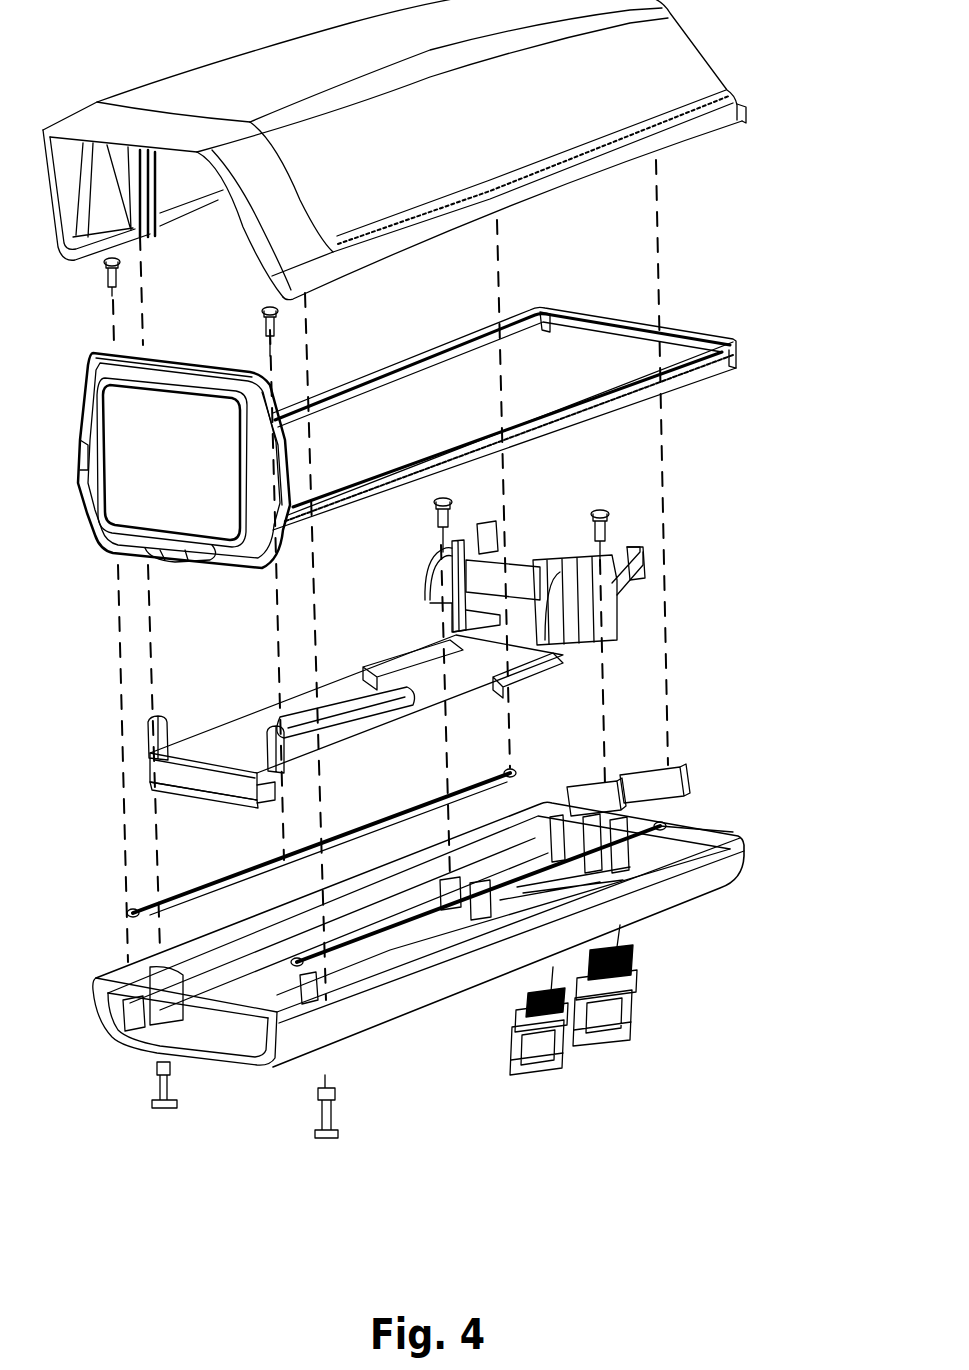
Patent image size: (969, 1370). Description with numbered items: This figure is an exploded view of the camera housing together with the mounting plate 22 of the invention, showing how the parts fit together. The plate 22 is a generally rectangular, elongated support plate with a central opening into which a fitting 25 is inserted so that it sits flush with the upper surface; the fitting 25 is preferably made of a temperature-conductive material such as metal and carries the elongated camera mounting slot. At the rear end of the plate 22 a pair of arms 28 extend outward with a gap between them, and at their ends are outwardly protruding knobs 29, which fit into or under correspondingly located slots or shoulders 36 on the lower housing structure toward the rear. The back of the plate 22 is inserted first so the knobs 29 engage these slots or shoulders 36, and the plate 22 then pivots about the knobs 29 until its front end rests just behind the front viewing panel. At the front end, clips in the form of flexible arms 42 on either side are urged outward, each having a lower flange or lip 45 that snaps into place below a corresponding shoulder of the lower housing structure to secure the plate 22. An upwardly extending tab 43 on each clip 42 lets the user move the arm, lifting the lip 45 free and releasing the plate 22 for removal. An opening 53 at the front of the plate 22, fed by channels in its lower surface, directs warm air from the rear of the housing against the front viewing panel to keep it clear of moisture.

The plate 22 is at (237, 740).
The fitting 25 is at (363, 693).
The arms 28 is at (530, 690).
The knobs 29 is at (567, 683).
The slots or shoulders 36 is at (440, 618).
The clips 42 is at (290, 773).
The tab 43 is at (147, 723).
The lower flange or lip 45 is at (268, 790).
The opening 53 is at (200, 738).